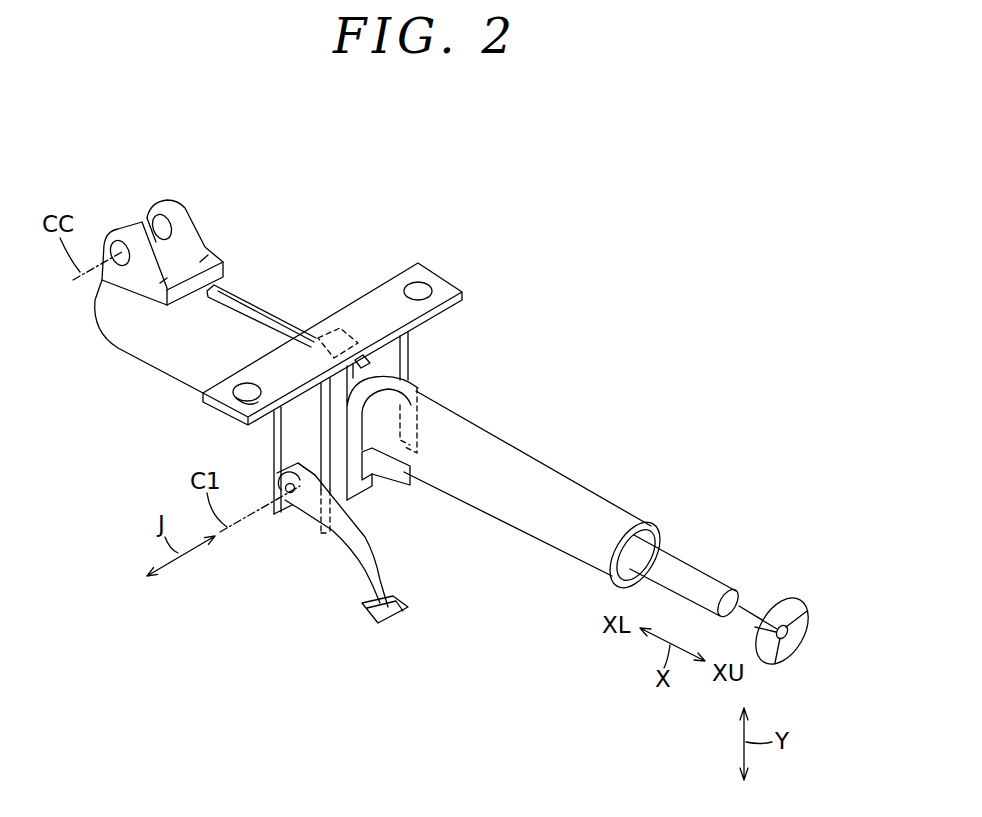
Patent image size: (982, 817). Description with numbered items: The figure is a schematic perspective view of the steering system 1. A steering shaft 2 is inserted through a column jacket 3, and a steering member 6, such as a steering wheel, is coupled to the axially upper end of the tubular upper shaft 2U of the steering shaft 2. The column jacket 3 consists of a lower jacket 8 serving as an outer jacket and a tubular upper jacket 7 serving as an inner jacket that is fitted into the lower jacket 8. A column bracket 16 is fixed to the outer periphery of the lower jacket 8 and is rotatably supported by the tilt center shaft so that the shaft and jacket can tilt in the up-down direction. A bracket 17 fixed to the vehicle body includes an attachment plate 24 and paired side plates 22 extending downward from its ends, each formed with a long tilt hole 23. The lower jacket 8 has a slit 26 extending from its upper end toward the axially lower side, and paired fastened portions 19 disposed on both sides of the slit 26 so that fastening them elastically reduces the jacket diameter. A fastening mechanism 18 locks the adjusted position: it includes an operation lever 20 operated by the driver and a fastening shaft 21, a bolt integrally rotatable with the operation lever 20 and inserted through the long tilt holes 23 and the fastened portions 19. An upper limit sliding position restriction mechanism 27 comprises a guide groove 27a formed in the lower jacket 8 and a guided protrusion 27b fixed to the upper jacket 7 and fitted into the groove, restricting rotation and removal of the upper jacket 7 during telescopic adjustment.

The steering system 1 is at (765, 527).
The steering shaft 2 is at (703, 559).
The upper shaft 2U is at (713, 578).
The column jacket 3 is at (537, 493).
The steering member 6 is at (787, 597).
The upper jacket 7 is at (588, 495).
The lower jacket 8 is at (166, 350).
The column bracket 16 is at (177, 207).
The bracket 17 is at (282, 431).
The fastening mechanism 18 is at (346, 577).
The fastened portions 19 is at (412, 447).
The operation lever 20 is at (368, 605).
The fastening shaft 21 is at (287, 508).
The side plates 22 is at (410, 357).
The long tilt hole 23 is at (320, 505).
The attachment plate 24 is at (393, 296).
The slit 26 is at (374, 480).
The upper limit sliding position restriction mechanism 27 is at (288, 287).
The guide groove 27a is at (247, 298).
The guided protrusion 27b is at (317, 335).